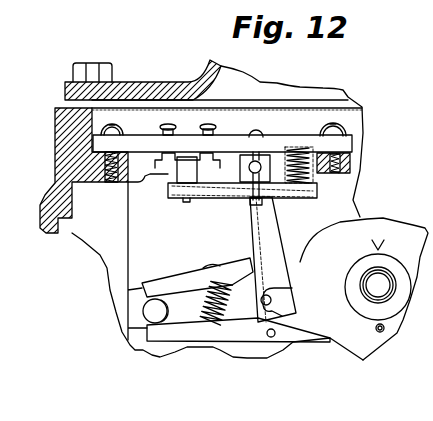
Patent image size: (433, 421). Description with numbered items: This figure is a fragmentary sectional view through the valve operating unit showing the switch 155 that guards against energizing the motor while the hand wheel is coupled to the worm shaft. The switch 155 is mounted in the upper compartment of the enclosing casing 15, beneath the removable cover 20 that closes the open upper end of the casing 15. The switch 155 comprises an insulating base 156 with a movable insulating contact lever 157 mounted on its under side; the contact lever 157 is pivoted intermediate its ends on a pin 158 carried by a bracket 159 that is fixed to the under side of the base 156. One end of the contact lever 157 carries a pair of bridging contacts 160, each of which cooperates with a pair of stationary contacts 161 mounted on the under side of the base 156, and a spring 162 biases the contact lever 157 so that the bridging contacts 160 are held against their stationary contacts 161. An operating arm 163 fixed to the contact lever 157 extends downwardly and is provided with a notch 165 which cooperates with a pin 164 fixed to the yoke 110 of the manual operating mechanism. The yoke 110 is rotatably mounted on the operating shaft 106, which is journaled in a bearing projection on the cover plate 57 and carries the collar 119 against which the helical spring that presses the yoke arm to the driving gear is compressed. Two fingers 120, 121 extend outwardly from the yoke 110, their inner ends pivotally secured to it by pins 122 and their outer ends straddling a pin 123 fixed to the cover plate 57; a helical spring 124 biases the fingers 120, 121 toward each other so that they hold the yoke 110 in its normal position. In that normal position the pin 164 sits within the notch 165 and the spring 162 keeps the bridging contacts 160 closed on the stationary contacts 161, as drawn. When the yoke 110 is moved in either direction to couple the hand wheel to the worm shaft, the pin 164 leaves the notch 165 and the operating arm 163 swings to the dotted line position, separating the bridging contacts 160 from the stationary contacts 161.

The casing 15 is at (58, 188).
The cover 20 is at (143, 81).
The cover plate 57 is at (143, 348).
The operating shaft 106 is at (382, 283).
The yoke 110 is at (388, 223).
The collar 119 is at (355, 302).
The finger 120 is at (178, 280).
The finger 121 is at (193, 342).
The pin 122 is at (273, 338).
The pin 123 is at (147, 312).
The helical spring 124 is at (200, 322).
The switch 155 is at (221, 121).
The insulating base 156 is at (350, 143).
The contact lever 157 is at (222, 199).
The pin 158 is at (249, 152).
The bracket 159 is at (269, 152).
The bridging contacts 160 is at (163, 159).
The stationary contacts 161 is at (155, 153).
The spring 162 is at (307, 173).
The operating arm 163 is at (268, 226).
The pin 164 is at (260, 300).
The notch 165 is at (267, 292).